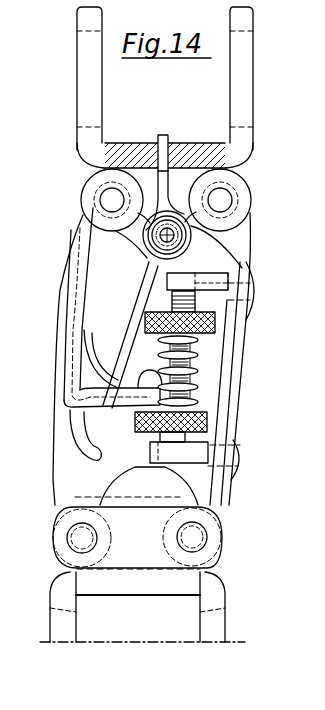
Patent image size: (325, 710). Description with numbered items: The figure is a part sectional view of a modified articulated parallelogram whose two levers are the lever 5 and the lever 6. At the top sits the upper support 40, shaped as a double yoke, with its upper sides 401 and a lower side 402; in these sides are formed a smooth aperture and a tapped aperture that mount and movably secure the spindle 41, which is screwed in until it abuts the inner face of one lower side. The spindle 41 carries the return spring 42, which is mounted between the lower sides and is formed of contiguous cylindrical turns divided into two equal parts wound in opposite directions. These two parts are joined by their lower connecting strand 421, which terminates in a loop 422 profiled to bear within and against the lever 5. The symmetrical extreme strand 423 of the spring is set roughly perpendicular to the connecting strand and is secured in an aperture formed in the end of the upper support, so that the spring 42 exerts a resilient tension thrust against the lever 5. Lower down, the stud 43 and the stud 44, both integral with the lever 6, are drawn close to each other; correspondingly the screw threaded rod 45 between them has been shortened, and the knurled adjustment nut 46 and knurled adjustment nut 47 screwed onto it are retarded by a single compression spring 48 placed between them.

The upper support 40 is at (249, 156).
The upper sides 401 is at (238, 80).
The lower side 402 is at (248, 187).
The extreme strand 423 is at (166, 141).
The spindle 41 is at (150, 235).
The return spring 42 is at (138, 255).
The lower connecting strand 421 is at (128, 323).
The loop 422 is at (86, 444).
The stud 43 is at (203, 285).
The stud 44 is at (208, 455).
The screw threaded rod 45 is at (197, 305).
The knurled adjustment nut 46 is at (216, 333).
The knurled adjustment nut 47 is at (206, 424).
The compression spring 48 is at (197, 398).
The lever 5 is at (82, 345).
The lever 6 is at (222, 367).